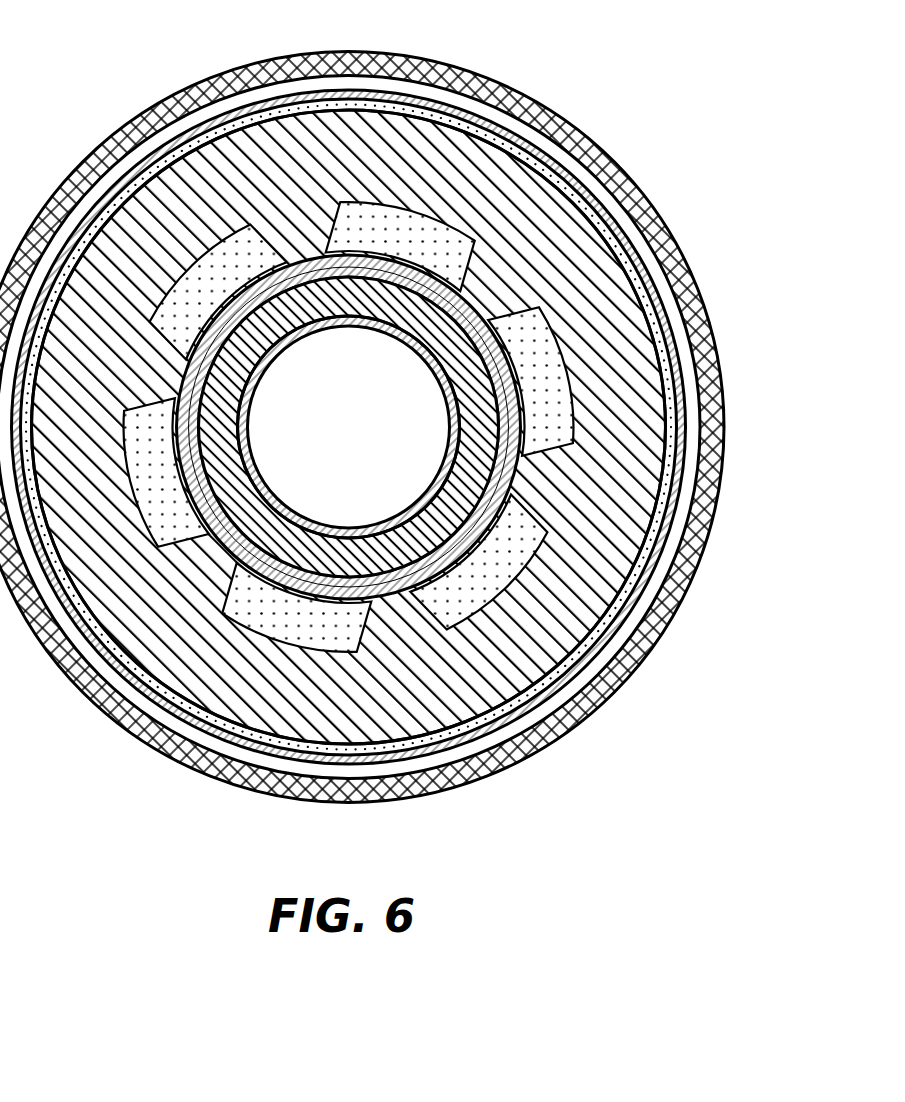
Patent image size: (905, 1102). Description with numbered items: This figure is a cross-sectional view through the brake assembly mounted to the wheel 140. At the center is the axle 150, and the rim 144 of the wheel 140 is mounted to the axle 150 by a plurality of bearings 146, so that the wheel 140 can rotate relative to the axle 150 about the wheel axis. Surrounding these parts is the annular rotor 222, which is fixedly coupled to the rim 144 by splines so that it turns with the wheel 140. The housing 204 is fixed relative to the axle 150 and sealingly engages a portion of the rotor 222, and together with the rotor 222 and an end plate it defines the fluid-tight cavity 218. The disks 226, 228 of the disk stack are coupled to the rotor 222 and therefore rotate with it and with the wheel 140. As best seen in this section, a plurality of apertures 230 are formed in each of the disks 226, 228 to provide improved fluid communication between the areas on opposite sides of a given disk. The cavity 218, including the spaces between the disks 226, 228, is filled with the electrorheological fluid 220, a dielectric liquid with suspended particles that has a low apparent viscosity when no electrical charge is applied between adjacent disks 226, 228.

The wheel 140 is at (261, 62).
The housing 204 is at (403, 95).
The disk 226 is at (512, 150).
The disk 228 is at (349, 427).
The annular rotor 222 is at (475, 305).
The apertures 230 is at (552, 330).
The electrorheological fluid 220 is at (560, 387).
The fluid-tight cavity 218 is at (653, 522).
The rim 144 is at (492, 482).
The bearings 146 is at (383, 578).
The axle 150 is at (273, 507).